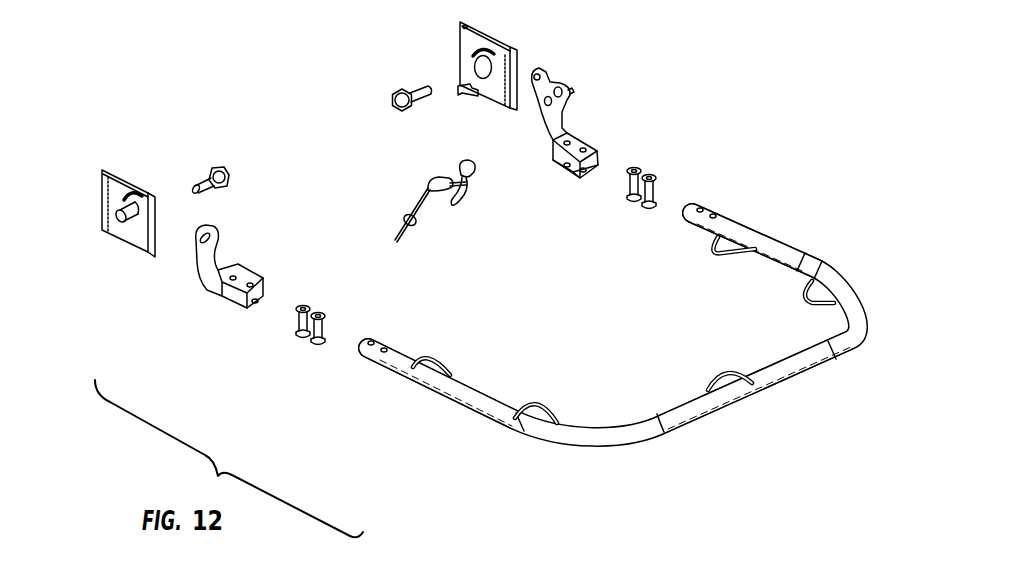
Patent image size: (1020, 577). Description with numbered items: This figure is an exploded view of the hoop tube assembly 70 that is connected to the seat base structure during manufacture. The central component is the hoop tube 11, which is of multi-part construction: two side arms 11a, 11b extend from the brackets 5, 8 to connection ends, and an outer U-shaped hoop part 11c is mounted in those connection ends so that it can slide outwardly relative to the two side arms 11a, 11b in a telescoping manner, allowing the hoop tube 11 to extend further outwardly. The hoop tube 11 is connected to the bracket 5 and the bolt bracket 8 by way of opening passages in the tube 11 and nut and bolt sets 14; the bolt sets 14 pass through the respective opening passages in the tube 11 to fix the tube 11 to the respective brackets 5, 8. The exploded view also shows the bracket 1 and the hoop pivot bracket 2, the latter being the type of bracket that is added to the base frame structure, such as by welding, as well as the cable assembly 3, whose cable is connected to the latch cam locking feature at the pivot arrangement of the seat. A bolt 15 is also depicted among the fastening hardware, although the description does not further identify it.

The hoop tube assembly 70 is at (212, 48).
The bracket 1 is at (106, 159).
The hoop pivot bracket 2 is at (454, 52).
The cable assembly 3 is at (420, 183).
The bracket 5 is at (199, 300).
The bolt bracket 8 is at (559, 72).
The hoop tube 11 is at (606, 426).
The side arm 11a is at (778, 243).
The side arm 11b is at (438, 383).
The outer U-shaped hoop part 11c is at (736, 395).
The nut and bolt sets 14 is at (659, 167).
The bolt 15 is at (199, 164).